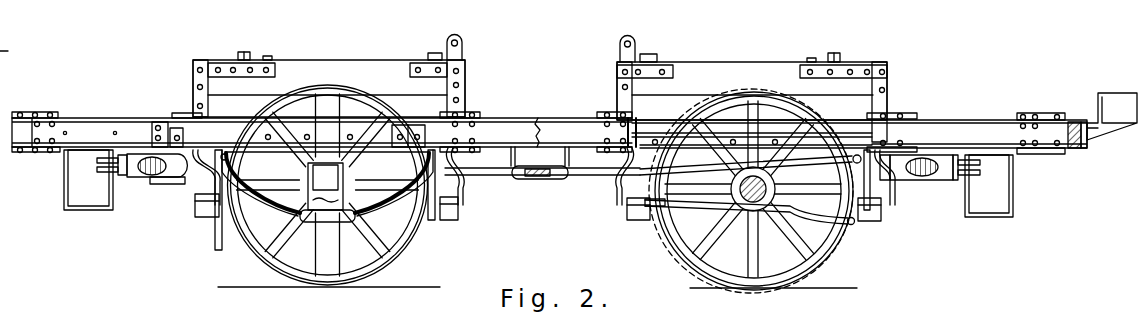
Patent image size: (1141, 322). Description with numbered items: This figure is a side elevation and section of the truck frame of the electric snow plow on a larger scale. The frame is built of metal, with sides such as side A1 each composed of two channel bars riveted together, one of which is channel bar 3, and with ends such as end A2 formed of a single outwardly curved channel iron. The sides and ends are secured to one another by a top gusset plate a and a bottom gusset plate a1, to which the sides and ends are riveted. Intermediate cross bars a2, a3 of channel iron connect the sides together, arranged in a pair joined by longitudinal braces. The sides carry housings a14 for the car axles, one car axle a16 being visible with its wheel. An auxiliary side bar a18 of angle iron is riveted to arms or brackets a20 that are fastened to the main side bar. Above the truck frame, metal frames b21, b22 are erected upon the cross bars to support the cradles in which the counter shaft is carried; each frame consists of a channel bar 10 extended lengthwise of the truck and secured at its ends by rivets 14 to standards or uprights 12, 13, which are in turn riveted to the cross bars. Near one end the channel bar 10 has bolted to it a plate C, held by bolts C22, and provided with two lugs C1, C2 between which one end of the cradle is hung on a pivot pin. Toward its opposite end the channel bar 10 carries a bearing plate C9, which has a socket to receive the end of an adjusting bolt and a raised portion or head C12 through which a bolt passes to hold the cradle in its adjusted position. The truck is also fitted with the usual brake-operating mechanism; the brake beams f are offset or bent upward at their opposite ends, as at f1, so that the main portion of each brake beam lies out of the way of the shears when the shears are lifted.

The channel bar 3 is at (557, 132).
The channel bar 10 is at (779, 60).
The standard or upright 12 is at (193, 105).
The standard or upright 13 is at (466, 101).
The rivets 14 is at (196, 71).
The side of truck frame A1 is at (859, 122).
The end of truck frame A2 is at (92, 128).
The top gusset plate a is at (43, 115).
The bottom gusset plate a1 is at (46, 148).
The cross bar a2 is at (890, 132).
The cross bar a3 is at (628, 131).
The housing a14 is at (327, 186).
The car axle a16 is at (750, 198).
The auxiliary side bar a18 is at (520, 124).
The arm or bracket a20 is at (150, 133).
The plate C is at (428, 57).
The lug C1 is at (620, 49).
The lug C2 is at (464, 40).
The bearing plate C9 is at (269, 56).
The raised portion or head C12 is at (242, 52).
The bolts C22 is at (440, 52).
The metal frame b21 is at (327, 61).
The metal frame b22 is at (722, 70).
The brake beam f is at (627, 202).
The offset end of brake beam f1 is at (195, 204).